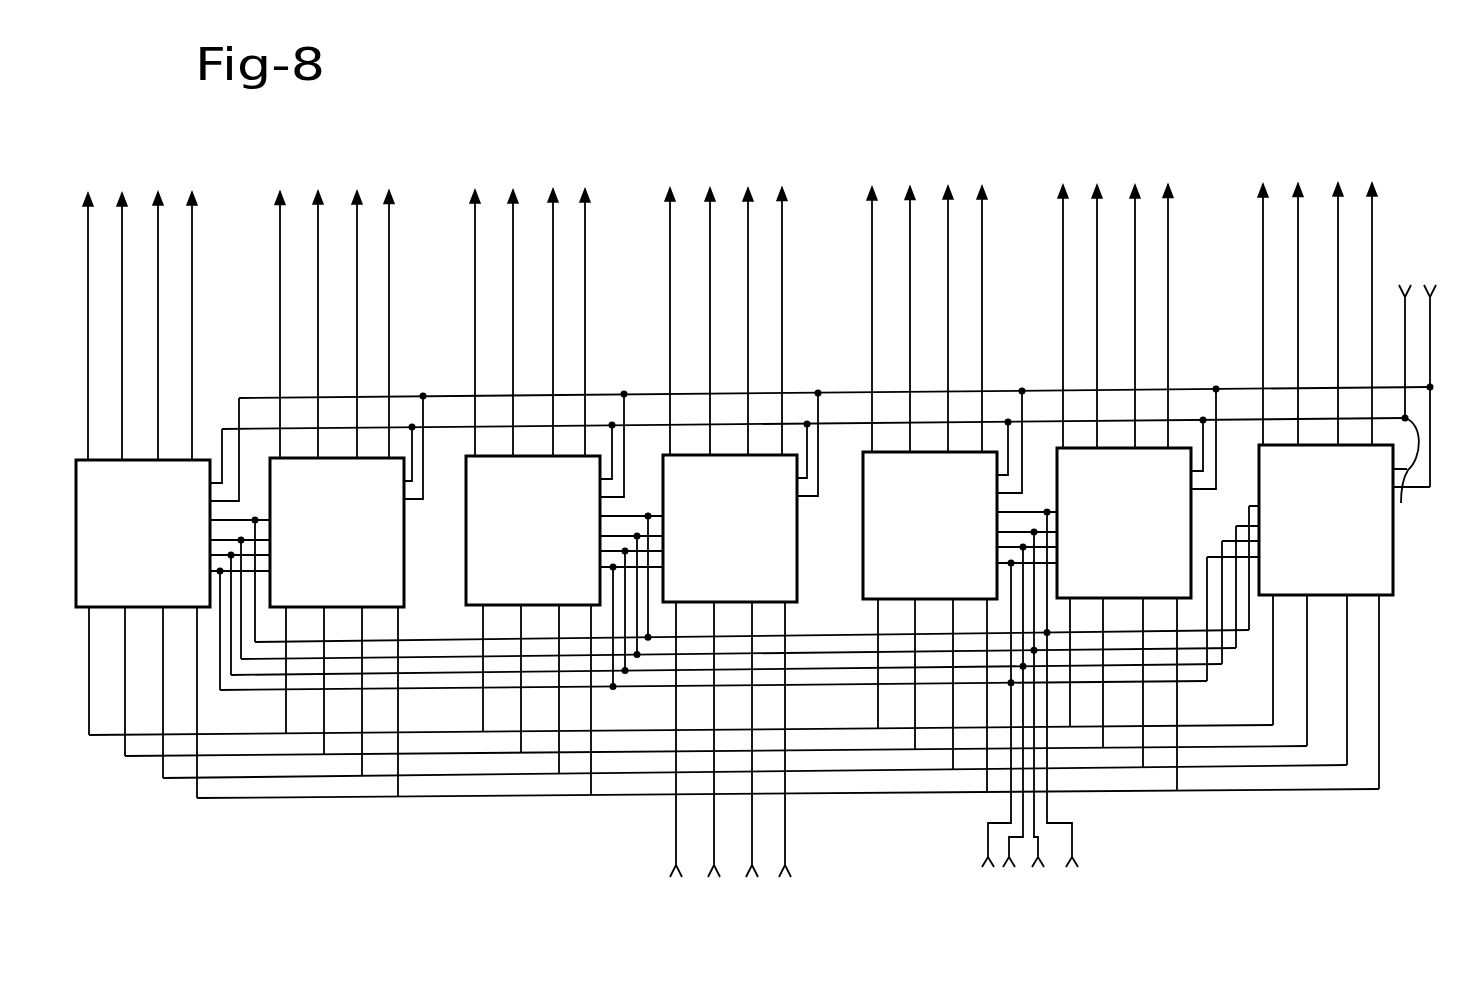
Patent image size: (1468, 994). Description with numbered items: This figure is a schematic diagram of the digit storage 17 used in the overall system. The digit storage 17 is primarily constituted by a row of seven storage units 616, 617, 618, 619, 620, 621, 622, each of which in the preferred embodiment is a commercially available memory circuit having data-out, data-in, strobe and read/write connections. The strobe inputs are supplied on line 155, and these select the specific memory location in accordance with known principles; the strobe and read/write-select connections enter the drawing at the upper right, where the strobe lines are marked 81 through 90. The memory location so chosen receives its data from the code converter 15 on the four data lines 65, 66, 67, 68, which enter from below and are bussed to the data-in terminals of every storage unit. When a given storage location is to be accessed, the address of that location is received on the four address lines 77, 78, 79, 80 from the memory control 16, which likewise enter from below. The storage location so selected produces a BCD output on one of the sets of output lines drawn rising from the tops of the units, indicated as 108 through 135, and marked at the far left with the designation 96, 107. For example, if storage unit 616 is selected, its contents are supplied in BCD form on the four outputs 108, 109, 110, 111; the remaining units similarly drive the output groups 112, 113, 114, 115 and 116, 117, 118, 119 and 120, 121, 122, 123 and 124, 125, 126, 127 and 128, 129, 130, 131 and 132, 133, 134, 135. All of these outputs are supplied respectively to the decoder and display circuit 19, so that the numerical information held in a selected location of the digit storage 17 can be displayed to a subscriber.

The digit storage 17 is at (573, 81).
The decoder and display circuit 19 is at (733, 119).
The code converter 15 is at (736, 907).
The memory control 16 is at (1093, 913).
The data output lines 96 is at (60, 198).
The data output line 107 is at (60, 198).
The output line 108 is at (84, 318).
The output line 109 is at (118, 306).
The output line 110 is at (154, 317).
The output line 111 is at (188, 305).
The output line 112 is at (276, 316).
The output line 113 is at (314, 304).
The output line 114 is at (353, 315).
The output line 115 is at (385, 303).
The output line 116 is at (471, 314).
The output line 117 is at (509, 302).
The output line 118 is at (549, 313).
The output line 119 is at (581, 302).
The output line 120 is at (666, 312).
The output line 121 is at (706, 300).
The output line 122 is at (744, 312).
The output line 123 is at (778, 300).
The output line 124 is at (868, 310).
The output line 125 is at (906, 298).
The output line 126 is at (944, 309).
The output line 127 is at (978, 298).
The output line 128 is at (1059, 307).
The output line 129 is at (1093, 295).
The output line 130 is at (1130, 306).
The output line 131 is at (1163, 295).
The output line 132 is at (1258, 304).
The output line 133 is at (1293, 293).
The output line 134 is at (1333, 304).
The output line 135 is at (1367, 292).
The data line 65 is at (666, 739).
The data line 66 is at (704, 739).
The data line 67 is at (743, 739).
The data line 68 is at (797, 739).
The address line 77 is at (993, 727).
The address line 78 is at (1015, 719).
The address line 79 is at (1048, 711).
The address line 80 is at (1073, 701).
The strobe input line 81 is at (1396, 239).
The strobe input line 90 is at (1409, 268).
The strobe input line 155 is at (1417, 473).
The storage unit 616 is at (116, 570).
The storage unit 617 is at (330, 568).
The storage unit 618 is at (506, 566).
The storage unit 619 is at (723, 565).
The storage unit 620 is at (903, 562).
The storage unit 621 is at (1117, 558).
The storage unit 622 is at (1319, 555).